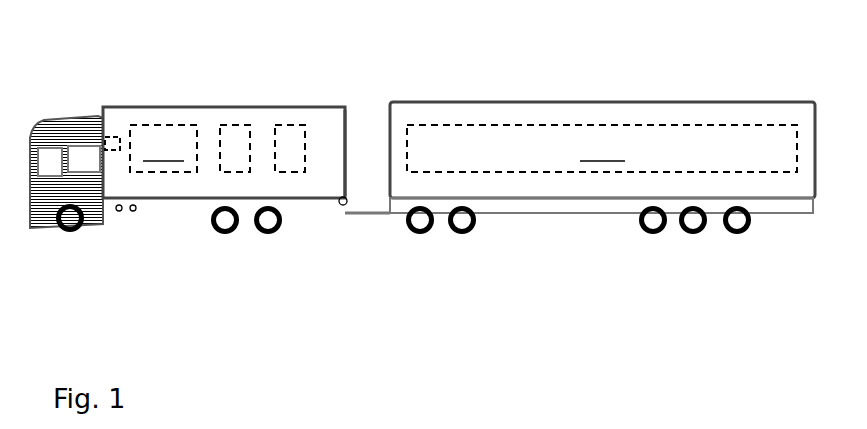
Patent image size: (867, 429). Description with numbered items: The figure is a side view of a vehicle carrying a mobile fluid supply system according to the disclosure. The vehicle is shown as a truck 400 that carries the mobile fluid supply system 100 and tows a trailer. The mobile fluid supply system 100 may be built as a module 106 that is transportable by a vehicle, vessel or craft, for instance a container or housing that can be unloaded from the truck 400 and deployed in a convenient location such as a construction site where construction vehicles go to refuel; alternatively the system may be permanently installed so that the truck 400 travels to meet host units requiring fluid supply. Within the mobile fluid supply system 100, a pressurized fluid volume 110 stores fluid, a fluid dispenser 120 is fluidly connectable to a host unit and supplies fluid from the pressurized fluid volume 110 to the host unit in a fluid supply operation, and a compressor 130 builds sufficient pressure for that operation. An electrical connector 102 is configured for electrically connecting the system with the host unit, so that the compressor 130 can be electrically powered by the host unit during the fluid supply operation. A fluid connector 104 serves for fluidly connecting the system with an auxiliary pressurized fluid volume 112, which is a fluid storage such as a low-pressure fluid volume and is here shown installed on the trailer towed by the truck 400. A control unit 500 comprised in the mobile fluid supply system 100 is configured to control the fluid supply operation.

The vehicle 400 is at (152, 75).
The mobile fluid supply system 100 is at (108, 235).
The electrical connector 102 is at (133, 212).
The fluid connector 104 is at (343, 205).
The module 106 is at (345, 120).
The pressurized fluid volume 110 is at (163, 148).
The fluid dispenser 120 is at (233, 128).
The compressor 130 is at (290, 128).
The control unit 500 is at (117, 133).
The auxiliary pressurized fluid volume 112 is at (602, 167).